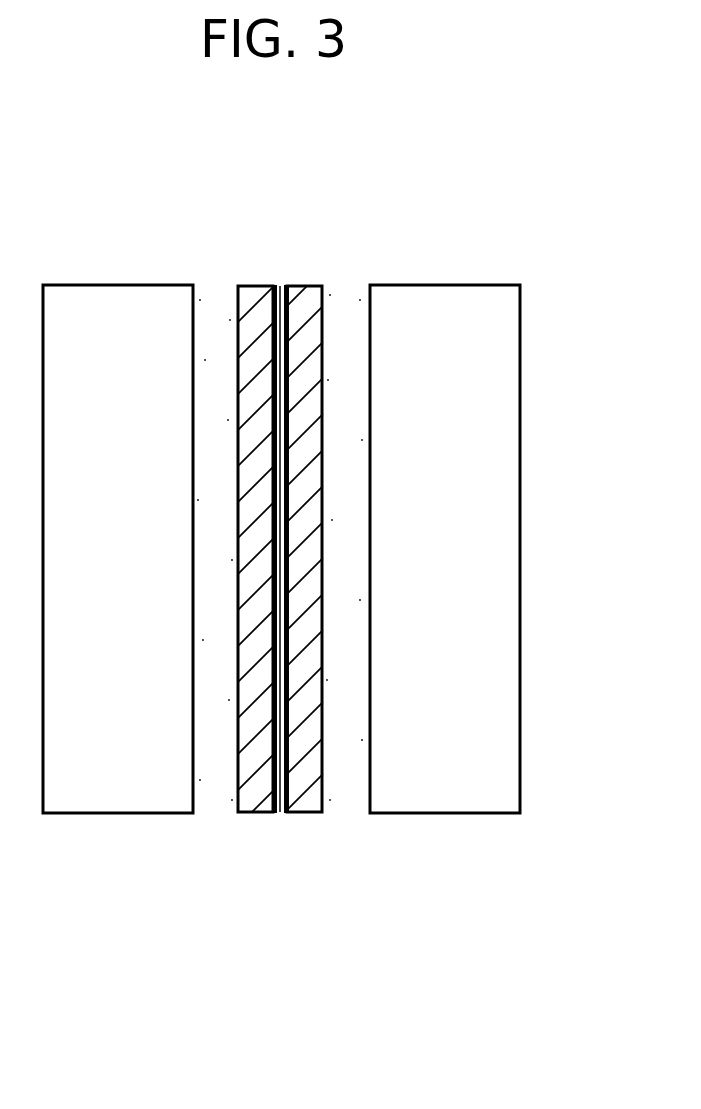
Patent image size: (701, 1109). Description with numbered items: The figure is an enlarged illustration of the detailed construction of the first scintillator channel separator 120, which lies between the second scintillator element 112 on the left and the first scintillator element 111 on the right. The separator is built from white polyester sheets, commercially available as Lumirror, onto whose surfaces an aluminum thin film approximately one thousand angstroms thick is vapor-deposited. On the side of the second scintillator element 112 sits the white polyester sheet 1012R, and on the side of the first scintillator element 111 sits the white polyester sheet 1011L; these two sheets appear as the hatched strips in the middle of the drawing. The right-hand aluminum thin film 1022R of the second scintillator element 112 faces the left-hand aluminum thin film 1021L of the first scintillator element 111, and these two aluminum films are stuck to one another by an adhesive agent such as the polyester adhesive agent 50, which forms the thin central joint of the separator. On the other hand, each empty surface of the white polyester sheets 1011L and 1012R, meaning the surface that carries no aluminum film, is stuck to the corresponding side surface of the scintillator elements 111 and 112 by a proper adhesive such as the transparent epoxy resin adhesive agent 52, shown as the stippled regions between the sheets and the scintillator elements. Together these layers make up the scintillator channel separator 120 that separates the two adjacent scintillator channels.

The second scintillator element 112 is at (115, 813).
The first scintillator element 111 is at (460, 815).
The transparent epoxy resin adhesive agent 52 is at (213, 293).
The polyester adhesive agent 50 is at (282, 285).
The white polyester sheet 1012R is at (252, 815).
The white polyester sheet 1011L is at (303, 815).
The right-hand aluminum thin film 1022R is at (278, 286).
The left-hand aluminum thin film 1021L is at (285, 286).
The first scintillator channel separator 120 is at (362, 574).